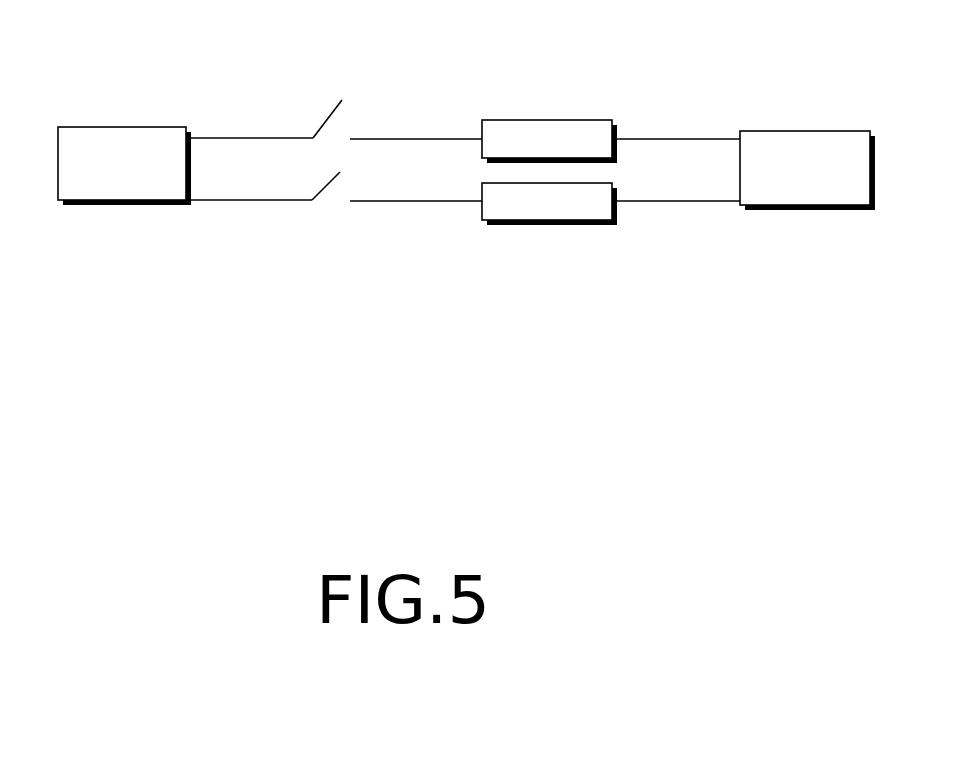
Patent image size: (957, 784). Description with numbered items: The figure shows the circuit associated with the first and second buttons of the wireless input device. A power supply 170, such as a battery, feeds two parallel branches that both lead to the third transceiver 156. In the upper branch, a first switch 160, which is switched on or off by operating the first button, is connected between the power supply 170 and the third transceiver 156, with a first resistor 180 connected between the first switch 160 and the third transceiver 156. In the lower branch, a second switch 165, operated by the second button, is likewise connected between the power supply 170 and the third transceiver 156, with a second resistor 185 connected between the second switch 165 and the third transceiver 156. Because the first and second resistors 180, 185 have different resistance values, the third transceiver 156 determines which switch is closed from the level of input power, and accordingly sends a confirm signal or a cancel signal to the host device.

The power supply 170 is at (121, 125).
The first switch 160 is at (344, 93).
The second switch 165 is at (339, 210).
The first resistor R1 180 is at (546, 118).
The second resistor R2 185 is at (553, 226).
The third transceiver 156 is at (802, 128).